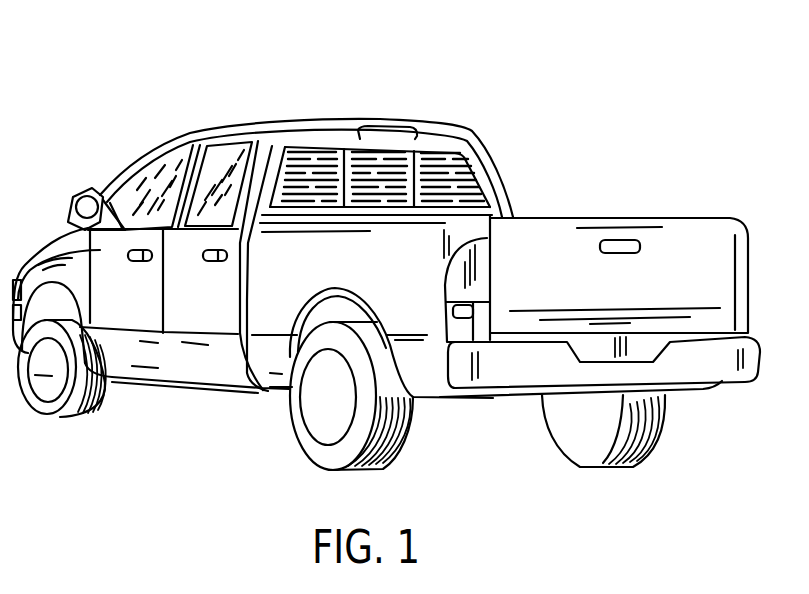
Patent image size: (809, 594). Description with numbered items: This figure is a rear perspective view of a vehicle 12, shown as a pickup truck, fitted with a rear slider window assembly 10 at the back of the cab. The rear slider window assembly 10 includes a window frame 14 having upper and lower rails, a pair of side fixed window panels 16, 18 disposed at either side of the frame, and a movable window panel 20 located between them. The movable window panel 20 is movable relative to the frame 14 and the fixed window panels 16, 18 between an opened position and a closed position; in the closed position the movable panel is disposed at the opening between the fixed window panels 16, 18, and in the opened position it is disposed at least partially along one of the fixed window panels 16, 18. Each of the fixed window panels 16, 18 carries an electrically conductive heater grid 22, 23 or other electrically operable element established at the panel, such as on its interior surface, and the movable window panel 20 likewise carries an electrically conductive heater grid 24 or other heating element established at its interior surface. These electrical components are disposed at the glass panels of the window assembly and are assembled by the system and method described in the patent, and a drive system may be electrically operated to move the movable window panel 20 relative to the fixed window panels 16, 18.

The rear slider window assembly 10 is at (482, 186).
The vehicle 12 is at (182, 101).
The window frame 14 is at (321, 138).
The side fixed window panel 16 is at (293, 165).
The side fixed window panel 18 is at (462, 164).
The movable window panel 20 is at (388, 152).
The heater grid 22 is at (305, 201).
The heater grid 23 is at (450, 160).
The heater grid 24 is at (370, 158).